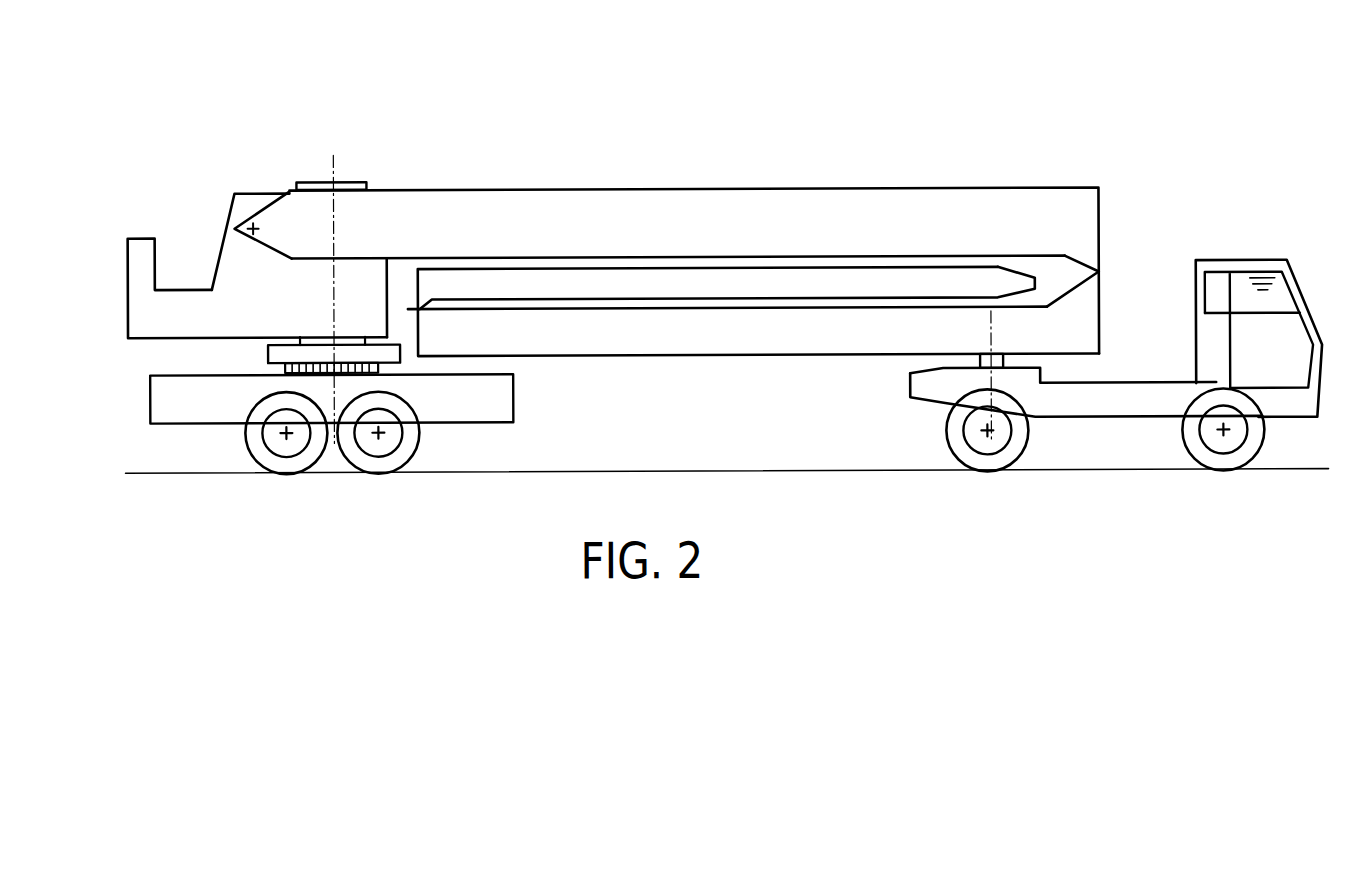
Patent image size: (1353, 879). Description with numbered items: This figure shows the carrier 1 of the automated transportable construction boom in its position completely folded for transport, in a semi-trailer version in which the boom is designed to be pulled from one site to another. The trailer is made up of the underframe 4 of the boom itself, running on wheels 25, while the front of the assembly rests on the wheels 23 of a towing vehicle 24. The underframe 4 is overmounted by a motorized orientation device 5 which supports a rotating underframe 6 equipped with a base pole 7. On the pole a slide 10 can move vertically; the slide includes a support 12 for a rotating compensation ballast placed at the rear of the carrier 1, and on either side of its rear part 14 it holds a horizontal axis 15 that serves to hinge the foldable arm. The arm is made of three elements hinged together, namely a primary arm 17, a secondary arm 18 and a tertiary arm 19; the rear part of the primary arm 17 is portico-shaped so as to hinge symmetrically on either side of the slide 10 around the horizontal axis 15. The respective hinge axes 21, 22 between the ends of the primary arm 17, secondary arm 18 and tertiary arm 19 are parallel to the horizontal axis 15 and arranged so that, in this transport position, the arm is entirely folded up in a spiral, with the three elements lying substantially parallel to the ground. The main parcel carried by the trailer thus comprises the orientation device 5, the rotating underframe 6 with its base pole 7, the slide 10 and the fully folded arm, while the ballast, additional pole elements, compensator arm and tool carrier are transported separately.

The carrier 1 is at (706, 162).
The underframe 4 is at (173, 410).
The motorized orientation device 5 is at (283, 372).
The rotating underframe 6 is at (282, 350).
The base pole 7 is at (345, 178).
The slide 10 is at (357, 272).
The support 12 is at (138, 257).
The rear part 14 is at (232, 268).
The horizontal axis 15 is at (238, 222).
The primary arm 17 is at (943, 213).
The secondary arm 18 is at (570, 330).
The tertiary arm 19 is at (845, 283).
The hinge axis 21 is at (1100, 272).
The hinge axis 22 is at (410, 310).
The wheels 23 is at (1017, 438).
The towing vehicle 24 is at (1135, 398).
The wheels 25 is at (300, 459).